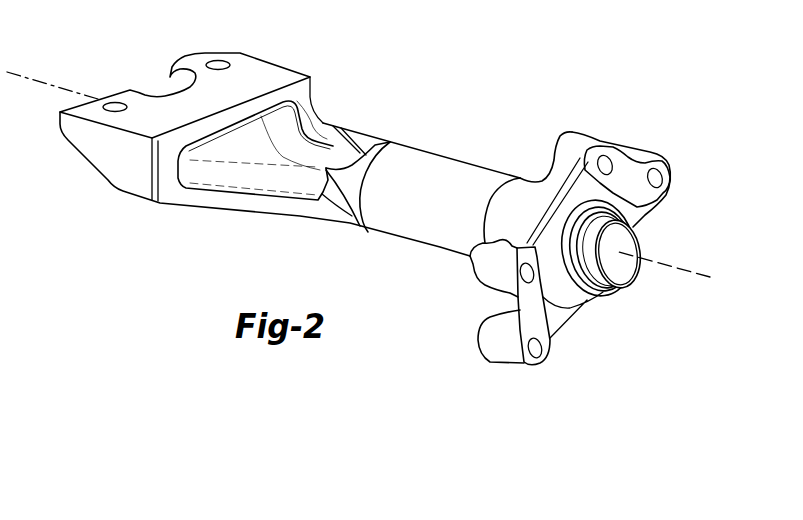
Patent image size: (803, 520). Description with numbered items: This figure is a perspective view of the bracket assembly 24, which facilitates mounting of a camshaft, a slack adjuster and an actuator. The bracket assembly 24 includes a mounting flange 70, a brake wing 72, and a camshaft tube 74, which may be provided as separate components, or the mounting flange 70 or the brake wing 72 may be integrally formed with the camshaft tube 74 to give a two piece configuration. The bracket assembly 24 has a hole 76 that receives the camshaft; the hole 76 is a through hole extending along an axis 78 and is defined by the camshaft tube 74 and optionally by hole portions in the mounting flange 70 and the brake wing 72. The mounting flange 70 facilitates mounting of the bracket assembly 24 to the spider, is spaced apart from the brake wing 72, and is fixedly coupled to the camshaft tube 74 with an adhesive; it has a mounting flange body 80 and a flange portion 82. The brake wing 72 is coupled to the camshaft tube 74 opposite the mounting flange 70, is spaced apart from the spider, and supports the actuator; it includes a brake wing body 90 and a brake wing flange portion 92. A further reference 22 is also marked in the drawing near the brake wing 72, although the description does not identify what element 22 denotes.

The axis 22 is at (52, 49).
The bracket assembly 24 is at (412, 74).
The mounting flange 70 is at (585, 140).
The brake wing 72 is at (273, 64).
The camshaft tube 74 is at (446, 155).
The hole 76 is at (624, 240).
The axis 78 is at (710, 277).
The mounting flange body 80 is at (529, 181).
The flange portion 82 is at (480, 365).
The brake wing body 90 is at (300, 217).
The brake wing flange portion 92 is at (110, 92).